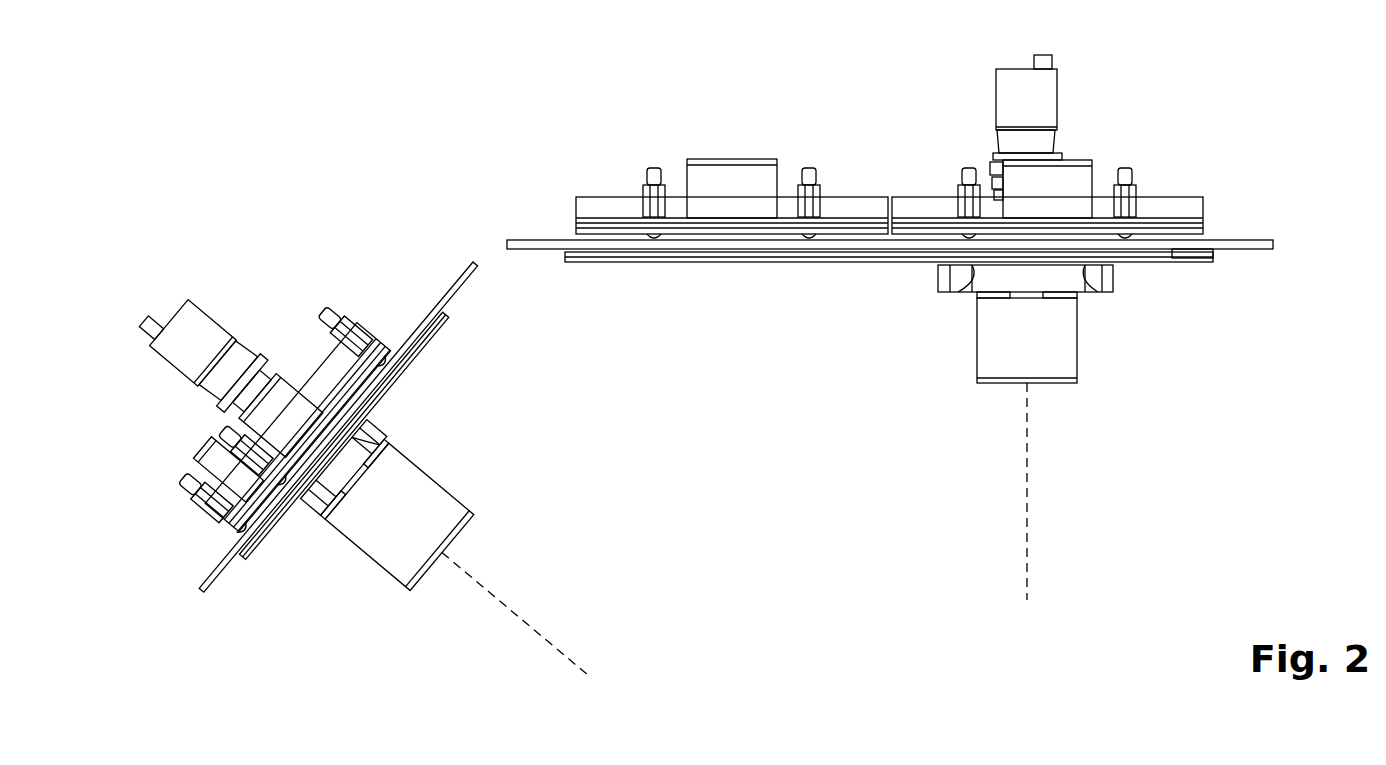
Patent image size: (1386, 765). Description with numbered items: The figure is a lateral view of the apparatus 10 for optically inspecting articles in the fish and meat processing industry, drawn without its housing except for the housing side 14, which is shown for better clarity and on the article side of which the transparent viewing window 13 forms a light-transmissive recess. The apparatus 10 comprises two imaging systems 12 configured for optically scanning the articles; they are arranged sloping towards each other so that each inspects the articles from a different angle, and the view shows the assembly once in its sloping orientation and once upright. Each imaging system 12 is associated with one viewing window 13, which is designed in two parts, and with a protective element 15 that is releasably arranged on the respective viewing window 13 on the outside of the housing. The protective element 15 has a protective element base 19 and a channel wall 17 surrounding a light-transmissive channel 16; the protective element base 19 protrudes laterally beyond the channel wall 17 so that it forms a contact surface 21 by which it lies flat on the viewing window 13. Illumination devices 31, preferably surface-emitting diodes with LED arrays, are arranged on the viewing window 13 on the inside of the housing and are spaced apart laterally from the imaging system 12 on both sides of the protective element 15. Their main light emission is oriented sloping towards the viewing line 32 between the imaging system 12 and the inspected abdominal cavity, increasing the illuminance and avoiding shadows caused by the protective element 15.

The apparatus 10 is at (303, 143).
The imaging system 12 is at (1040, 98).
The transparent viewing window 13 is at (770, 262).
The housing side 14 is at (1247, 252).
The protective element 15 is at (1097, 337).
The light-transmissive channel 16 is at (1057, 388).
The channel wall 17 is at (975, 365).
The protective element base 19 is at (1067, 273).
The contact surface 21 is at (968, 290).
The illumination device 31 is at (852, 208).
The viewing line 32 is at (1030, 505).